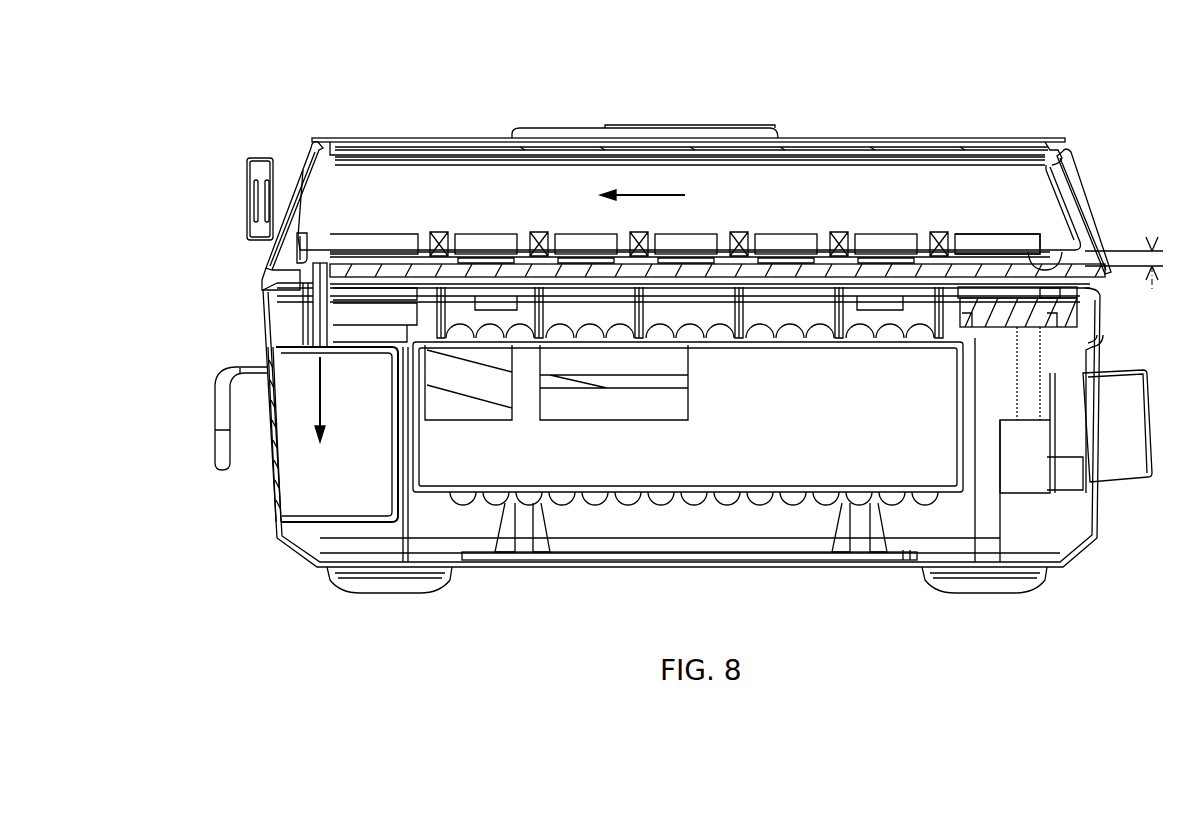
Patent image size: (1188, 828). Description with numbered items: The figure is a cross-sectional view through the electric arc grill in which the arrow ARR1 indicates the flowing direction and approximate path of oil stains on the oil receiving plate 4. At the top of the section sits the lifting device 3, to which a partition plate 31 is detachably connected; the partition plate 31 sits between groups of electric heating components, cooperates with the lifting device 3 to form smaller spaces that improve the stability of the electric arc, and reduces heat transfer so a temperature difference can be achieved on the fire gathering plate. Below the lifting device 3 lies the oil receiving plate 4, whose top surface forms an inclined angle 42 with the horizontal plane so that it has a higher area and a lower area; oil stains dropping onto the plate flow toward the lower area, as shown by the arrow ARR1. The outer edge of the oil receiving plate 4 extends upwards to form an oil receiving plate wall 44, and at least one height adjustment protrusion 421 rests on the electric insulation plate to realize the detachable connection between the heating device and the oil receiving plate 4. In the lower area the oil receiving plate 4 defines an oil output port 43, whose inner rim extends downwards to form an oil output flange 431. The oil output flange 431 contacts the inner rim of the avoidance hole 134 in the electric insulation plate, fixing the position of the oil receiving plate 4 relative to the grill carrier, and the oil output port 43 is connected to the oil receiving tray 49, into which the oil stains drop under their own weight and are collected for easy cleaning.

The lifting device 3 is at (303, 172).
The partition plate 31 is at (407, 190).
The oil receiving plate 4 is at (997, 253).
The height adjustment protrusion 421 is at (1043, 260).
The inclined angle 42 is at (1152, 251).
The oil receiving plate wall 44 is at (302, 245).
The avoidance hole 134 is at (305, 272).
The oil output flange 431 is at (305, 307).
The oil output port 43 is at (317, 313).
The oil receiving tray 49 is at (313, 465).
The flowing direction of oil stains ARR1 is at (643, 195).